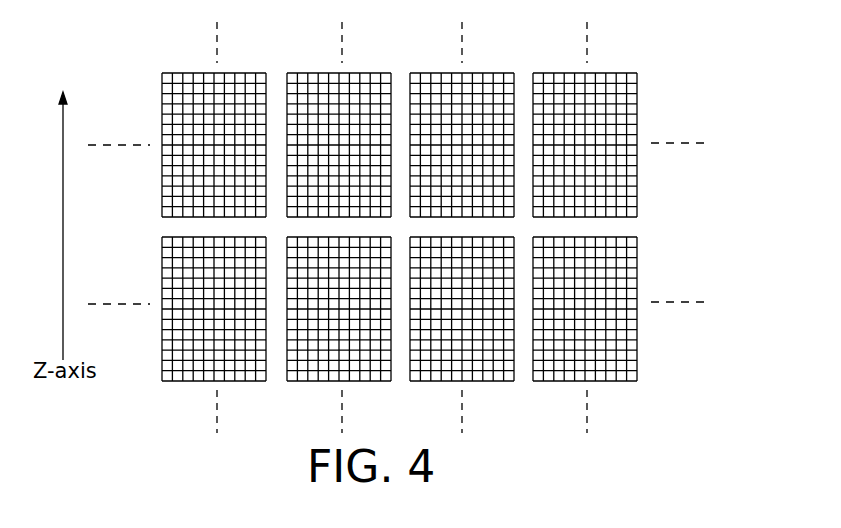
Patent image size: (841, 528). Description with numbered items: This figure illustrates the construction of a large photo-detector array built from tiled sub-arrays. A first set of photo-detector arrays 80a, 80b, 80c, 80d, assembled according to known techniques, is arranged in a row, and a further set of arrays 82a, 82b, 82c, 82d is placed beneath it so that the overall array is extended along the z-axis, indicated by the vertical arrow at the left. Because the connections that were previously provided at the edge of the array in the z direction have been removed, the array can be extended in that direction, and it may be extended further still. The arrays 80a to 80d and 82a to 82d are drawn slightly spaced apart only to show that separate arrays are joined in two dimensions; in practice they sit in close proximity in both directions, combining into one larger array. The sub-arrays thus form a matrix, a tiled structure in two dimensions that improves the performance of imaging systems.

The photo-detector array 80a is at (181, 73).
The photo-detector array 80b is at (306, 73).
The photo-detector array 80c is at (429, 73).
The photo-detector array 80d is at (552, 73).
The further photo-detector array 82a is at (183, 381).
The further photo-detector array 82b is at (308, 381).
The further photo-detector array 82c is at (431, 381).
The further photo-detector array 82d is at (554, 381).